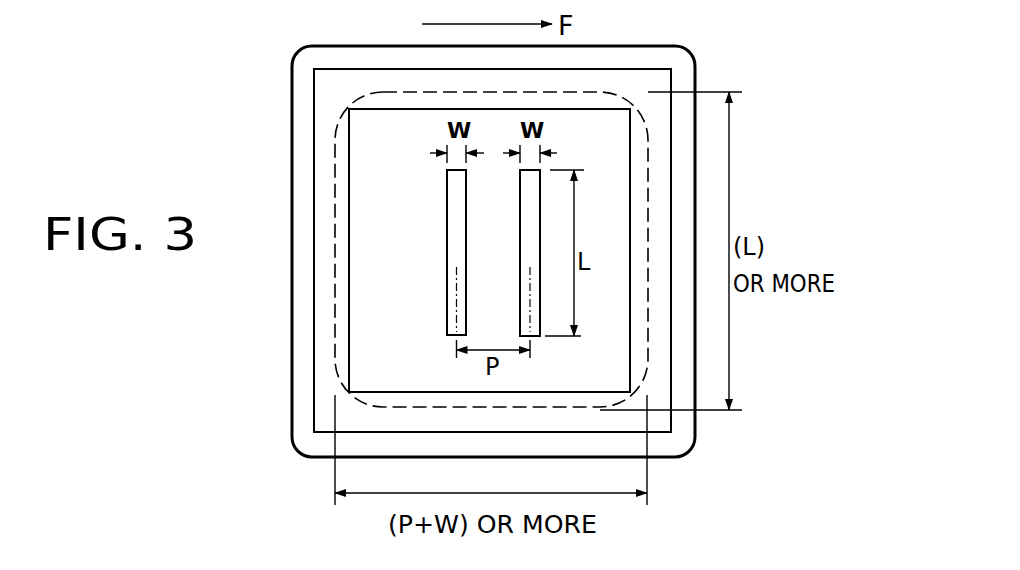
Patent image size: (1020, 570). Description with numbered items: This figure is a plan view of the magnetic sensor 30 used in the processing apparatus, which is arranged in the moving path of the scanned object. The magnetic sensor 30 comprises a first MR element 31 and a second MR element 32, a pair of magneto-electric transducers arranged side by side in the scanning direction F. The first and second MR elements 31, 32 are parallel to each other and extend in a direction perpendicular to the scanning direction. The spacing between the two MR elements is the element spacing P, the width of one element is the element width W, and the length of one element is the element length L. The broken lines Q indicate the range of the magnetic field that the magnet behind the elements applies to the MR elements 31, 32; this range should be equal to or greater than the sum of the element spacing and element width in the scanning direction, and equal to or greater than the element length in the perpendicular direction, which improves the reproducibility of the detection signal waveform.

The magnetic sensor 30 is at (285, 197).
The first MR element 31 is at (447, 232).
The second MR element 32 is at (520, 228).
The broken lines indicating magnetic field range Q is at (334, 256).